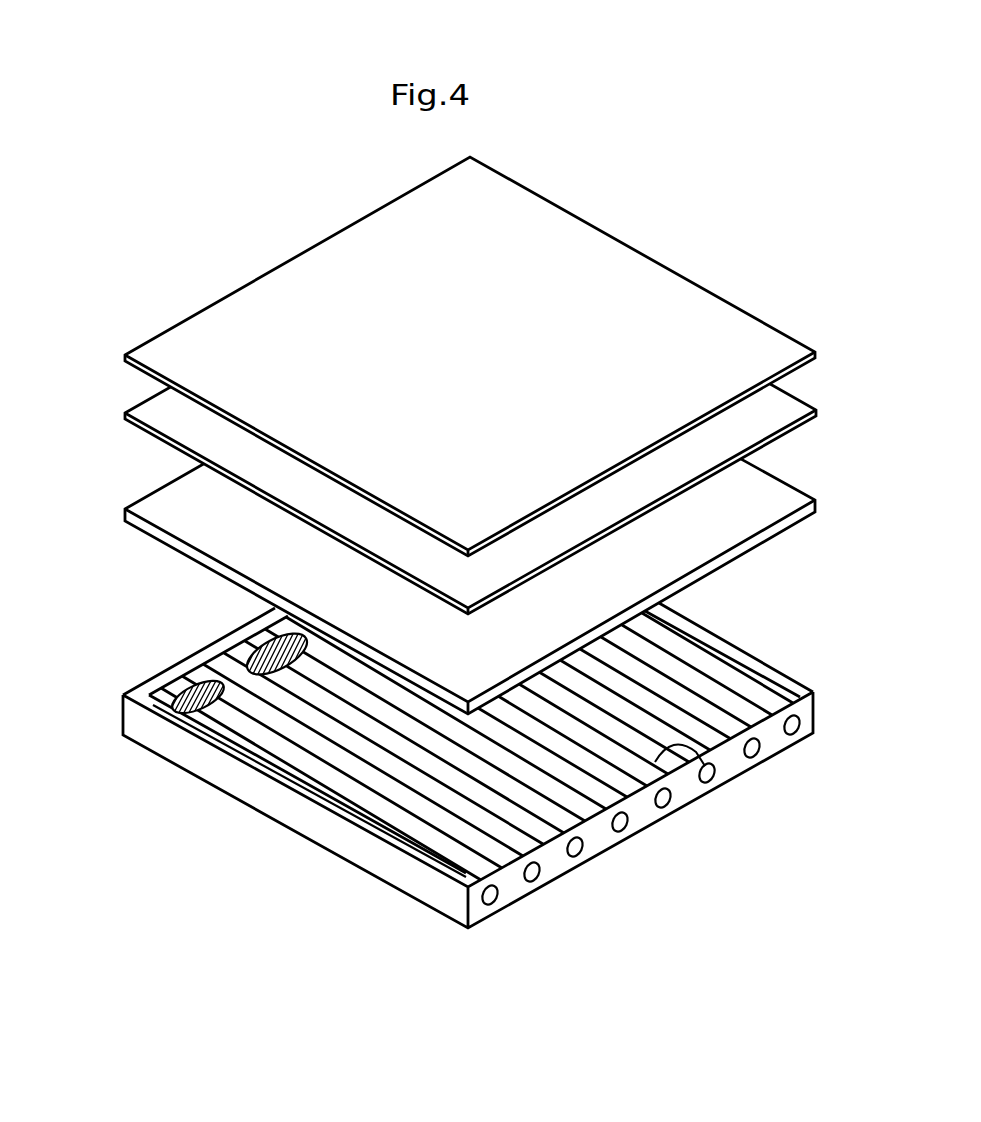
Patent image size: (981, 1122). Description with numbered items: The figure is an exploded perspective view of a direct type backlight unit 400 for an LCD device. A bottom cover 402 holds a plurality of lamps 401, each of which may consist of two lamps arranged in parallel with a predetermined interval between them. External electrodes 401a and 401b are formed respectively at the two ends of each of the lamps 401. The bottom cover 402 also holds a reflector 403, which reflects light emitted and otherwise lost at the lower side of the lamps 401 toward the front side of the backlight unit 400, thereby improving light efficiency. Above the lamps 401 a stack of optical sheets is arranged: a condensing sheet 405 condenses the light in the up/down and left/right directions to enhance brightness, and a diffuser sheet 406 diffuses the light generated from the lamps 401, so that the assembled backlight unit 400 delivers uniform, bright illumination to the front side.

The direct type backlight unit 400 is at (117, 303).
The lamps 401 is at (333, 760).
The external electrode 401a is at (193, 692).
The external electrode 401b is at (710, 766).
The bottom cover 402 is at (425, 888).
The reflector 403 is at (421, 782).
The condensing sheet 405 is at (786, 500).
The diffuser sheet 406 is at (818, 412).